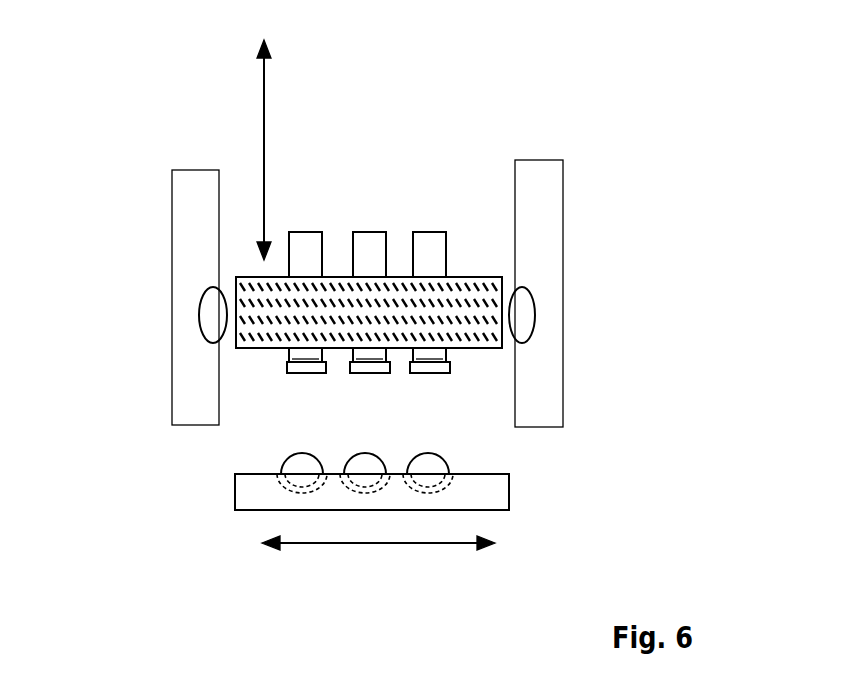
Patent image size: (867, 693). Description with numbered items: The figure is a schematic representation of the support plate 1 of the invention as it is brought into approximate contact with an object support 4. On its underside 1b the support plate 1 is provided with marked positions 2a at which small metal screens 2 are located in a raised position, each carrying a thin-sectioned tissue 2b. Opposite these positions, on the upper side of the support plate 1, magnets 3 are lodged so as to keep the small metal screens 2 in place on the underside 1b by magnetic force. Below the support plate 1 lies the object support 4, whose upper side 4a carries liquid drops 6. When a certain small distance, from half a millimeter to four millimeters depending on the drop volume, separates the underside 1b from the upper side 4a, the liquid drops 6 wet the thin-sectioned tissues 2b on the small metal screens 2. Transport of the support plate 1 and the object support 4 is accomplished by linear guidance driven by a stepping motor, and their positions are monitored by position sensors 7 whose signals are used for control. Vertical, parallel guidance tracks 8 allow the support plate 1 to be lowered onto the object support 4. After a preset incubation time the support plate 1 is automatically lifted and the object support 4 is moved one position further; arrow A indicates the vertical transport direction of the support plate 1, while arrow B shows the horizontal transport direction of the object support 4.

The support plate 1 is at (486, 277).
The underside of support plate 1b is at (258, 348).
The small metal screens 2 is at (295, 374).
The marked positions 2a is at (433, 352).
The thin-sectioned tissues 2b is at (389, 365).
The magnets 3 is at (428, 240).
The object support 4 is at (499, 491).
The upper side of object support 4a is at (498, 473).
The liquid drops 6 is at (365, 462).
The position sensors 7 is at (212, 317).
The guidance tracks 8 is at (178, 195).
The arrow A is at (265, 118).
The arrow B is at (352, 545).